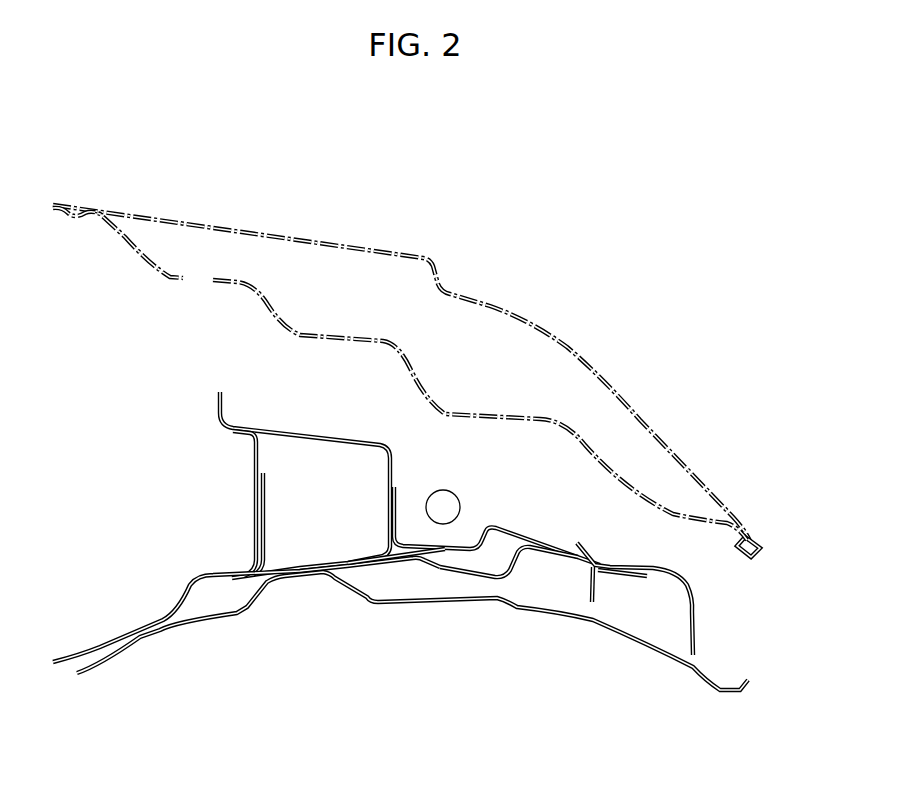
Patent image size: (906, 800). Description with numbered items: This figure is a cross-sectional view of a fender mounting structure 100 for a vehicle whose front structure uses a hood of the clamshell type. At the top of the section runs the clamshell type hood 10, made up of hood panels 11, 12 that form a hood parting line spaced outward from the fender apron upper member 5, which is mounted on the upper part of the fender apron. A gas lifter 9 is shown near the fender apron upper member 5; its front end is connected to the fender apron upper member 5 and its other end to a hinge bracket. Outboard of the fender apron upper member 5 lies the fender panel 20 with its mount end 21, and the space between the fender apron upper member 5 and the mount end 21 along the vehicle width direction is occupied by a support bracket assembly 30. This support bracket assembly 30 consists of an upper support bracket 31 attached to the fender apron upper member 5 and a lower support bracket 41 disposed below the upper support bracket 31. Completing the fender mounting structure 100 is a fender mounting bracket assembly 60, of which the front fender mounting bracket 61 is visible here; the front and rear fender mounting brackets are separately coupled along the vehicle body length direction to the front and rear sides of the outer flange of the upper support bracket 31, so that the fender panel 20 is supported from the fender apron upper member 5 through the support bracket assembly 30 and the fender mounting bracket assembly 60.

The fender mounting structure 100 is at (422, 191).
The clamshell type hood 10 is at (650, 262).
The hood panel 11 is at (548, 415).
The hood panel 12 is at (567, 347).
The fender apron upper member 5 is at (290, 422).
The gas lifter 9 is at (455, 496).
The fender panel 20 is at (720, 621).
The mount end 21 is at (613, 567).
The support bracket assembly 30 is at (492, 650).
The upper support bracket 31 is at (436, 567).
The lower support bracket 41 is at (486, 594).
The fender mounting bracket assembly 60 is at (606, 600).
The front fender mounting bracket 61 is at (628, 576).